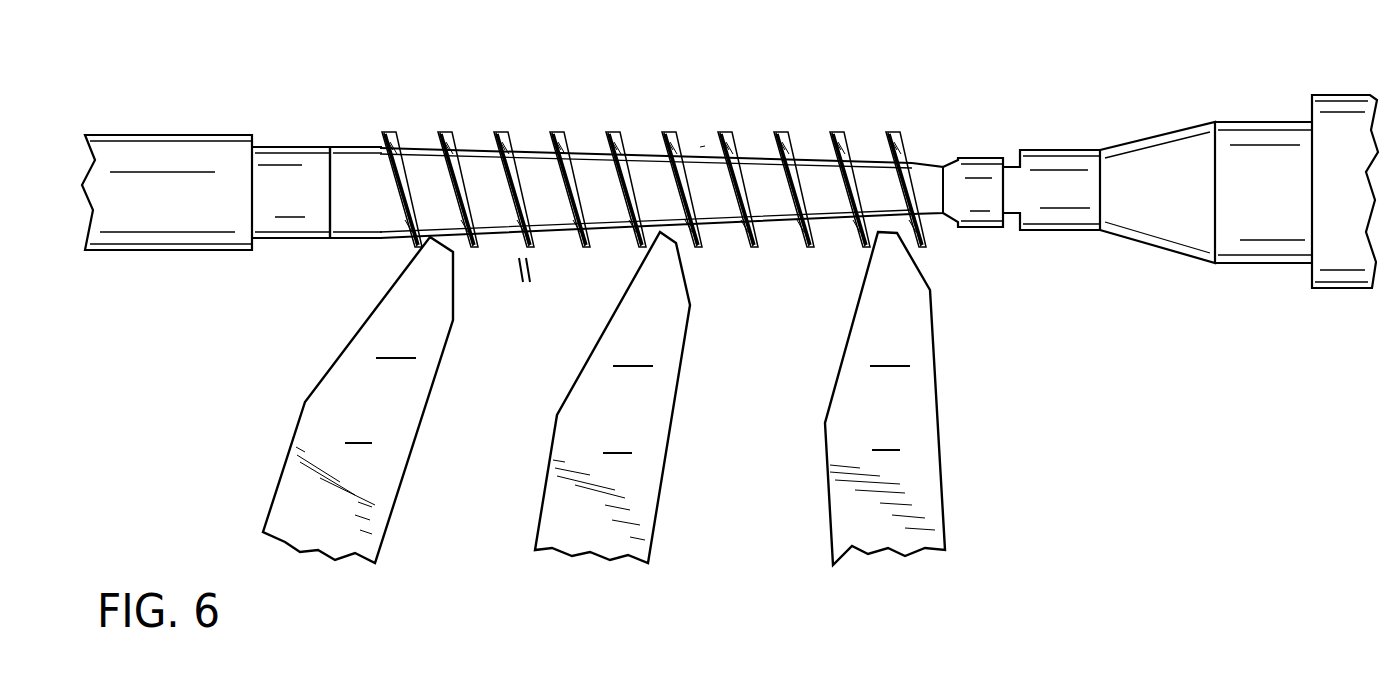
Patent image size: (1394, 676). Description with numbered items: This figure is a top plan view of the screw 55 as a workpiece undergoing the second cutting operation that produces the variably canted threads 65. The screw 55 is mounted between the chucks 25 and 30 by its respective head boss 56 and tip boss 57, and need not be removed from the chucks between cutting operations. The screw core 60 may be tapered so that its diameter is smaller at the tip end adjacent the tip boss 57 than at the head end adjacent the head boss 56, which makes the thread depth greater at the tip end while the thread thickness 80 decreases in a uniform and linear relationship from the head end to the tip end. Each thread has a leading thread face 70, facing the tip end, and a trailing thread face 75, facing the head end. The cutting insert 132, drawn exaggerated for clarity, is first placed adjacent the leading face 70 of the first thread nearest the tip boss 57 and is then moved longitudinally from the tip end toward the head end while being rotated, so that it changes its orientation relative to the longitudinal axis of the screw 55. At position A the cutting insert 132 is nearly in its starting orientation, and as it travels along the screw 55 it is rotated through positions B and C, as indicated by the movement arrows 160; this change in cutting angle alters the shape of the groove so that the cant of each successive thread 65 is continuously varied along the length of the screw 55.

The chuck 25 is at (212, 155).
The chuck 30 is at (1340, 105).
The screw 55 is at (695, 147).
The head boss 56 is at (358, 155).
The tip boss 57 is at (982, 170).
The screw core 60 is at (480, 175).
The variably canted threads 65 is at (652, 126).
The leading thread face 70 is at (703, 243).
The trailing thread face 75 is at (668, 126).
The thread thickness 80 is at (522, 288).
The cutting insert 132 is at (604, 398).
The feed direction 160 is at (402, 268).